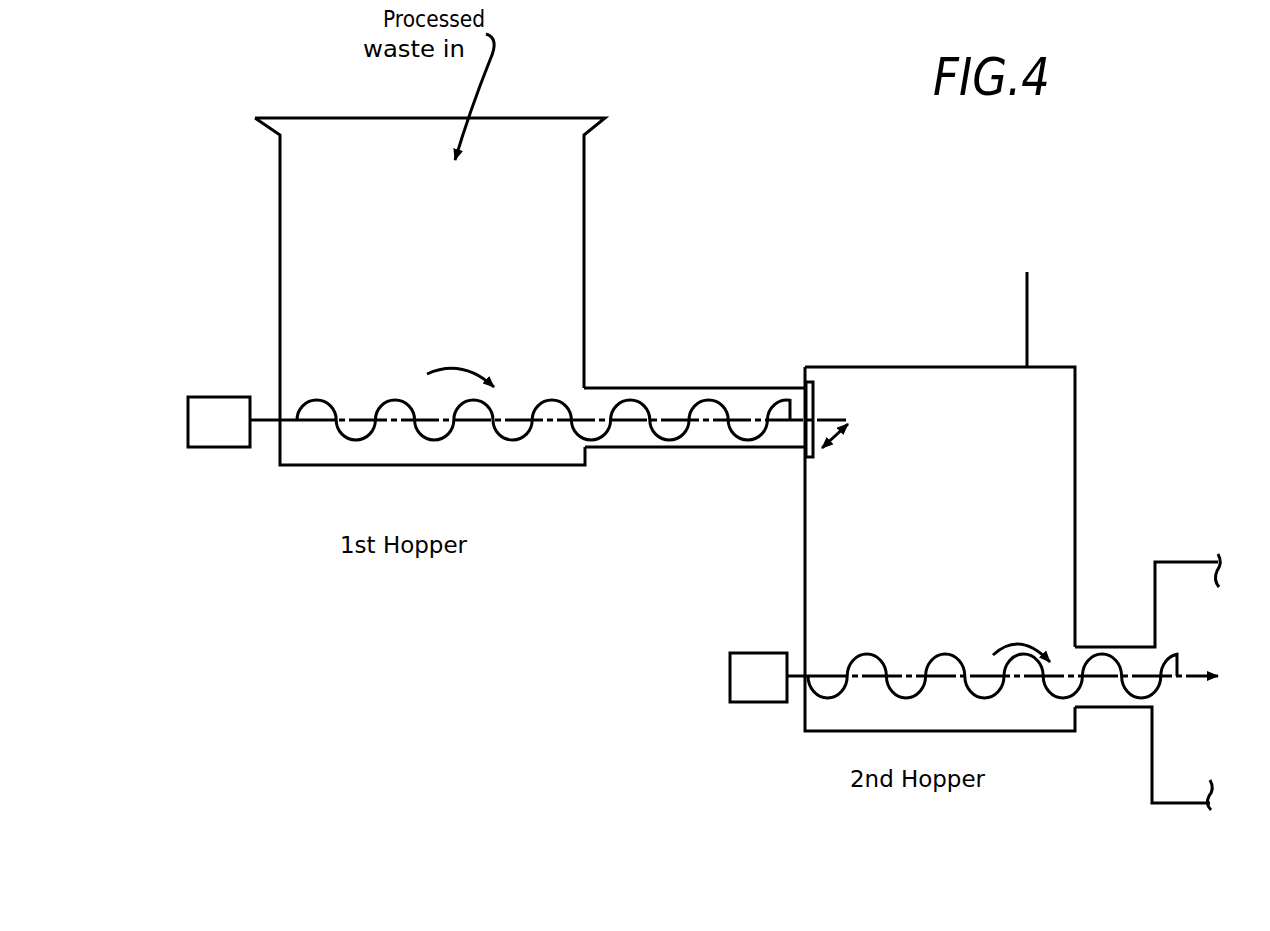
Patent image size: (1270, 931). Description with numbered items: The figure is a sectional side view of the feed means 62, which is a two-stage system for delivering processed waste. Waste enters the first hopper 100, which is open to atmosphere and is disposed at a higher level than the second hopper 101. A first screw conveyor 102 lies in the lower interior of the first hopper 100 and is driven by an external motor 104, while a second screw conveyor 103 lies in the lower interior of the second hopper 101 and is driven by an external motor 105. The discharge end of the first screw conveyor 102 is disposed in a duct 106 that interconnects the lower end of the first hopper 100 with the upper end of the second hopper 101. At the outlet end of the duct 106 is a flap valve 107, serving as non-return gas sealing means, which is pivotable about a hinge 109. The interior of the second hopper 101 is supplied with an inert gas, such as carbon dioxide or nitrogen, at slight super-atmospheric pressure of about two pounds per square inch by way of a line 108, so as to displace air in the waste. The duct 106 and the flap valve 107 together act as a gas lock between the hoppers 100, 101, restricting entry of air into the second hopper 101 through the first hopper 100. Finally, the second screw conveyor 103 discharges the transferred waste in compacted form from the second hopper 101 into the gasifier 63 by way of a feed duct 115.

The feed means 62 is at (714, 236).
The gasifier 63 is at (1146, 571).
The first hopper 100 is at (594, 313).
The second hopper 101 is at (802, 556).
The first screw conveyor 102 is at (568, 398).
The second screw conveyor 103 is at (889, 662).
The motor 104 is at (203, 413).
The motor 105 is at (745, 665).
The duct 106 is at (718, 387).
The flap valve 107 is at (815, 410).
The line 108 is at (1023, 285).
The hinge 109 is at (815, 381).
The feed duct 115 is at (1140, 708).